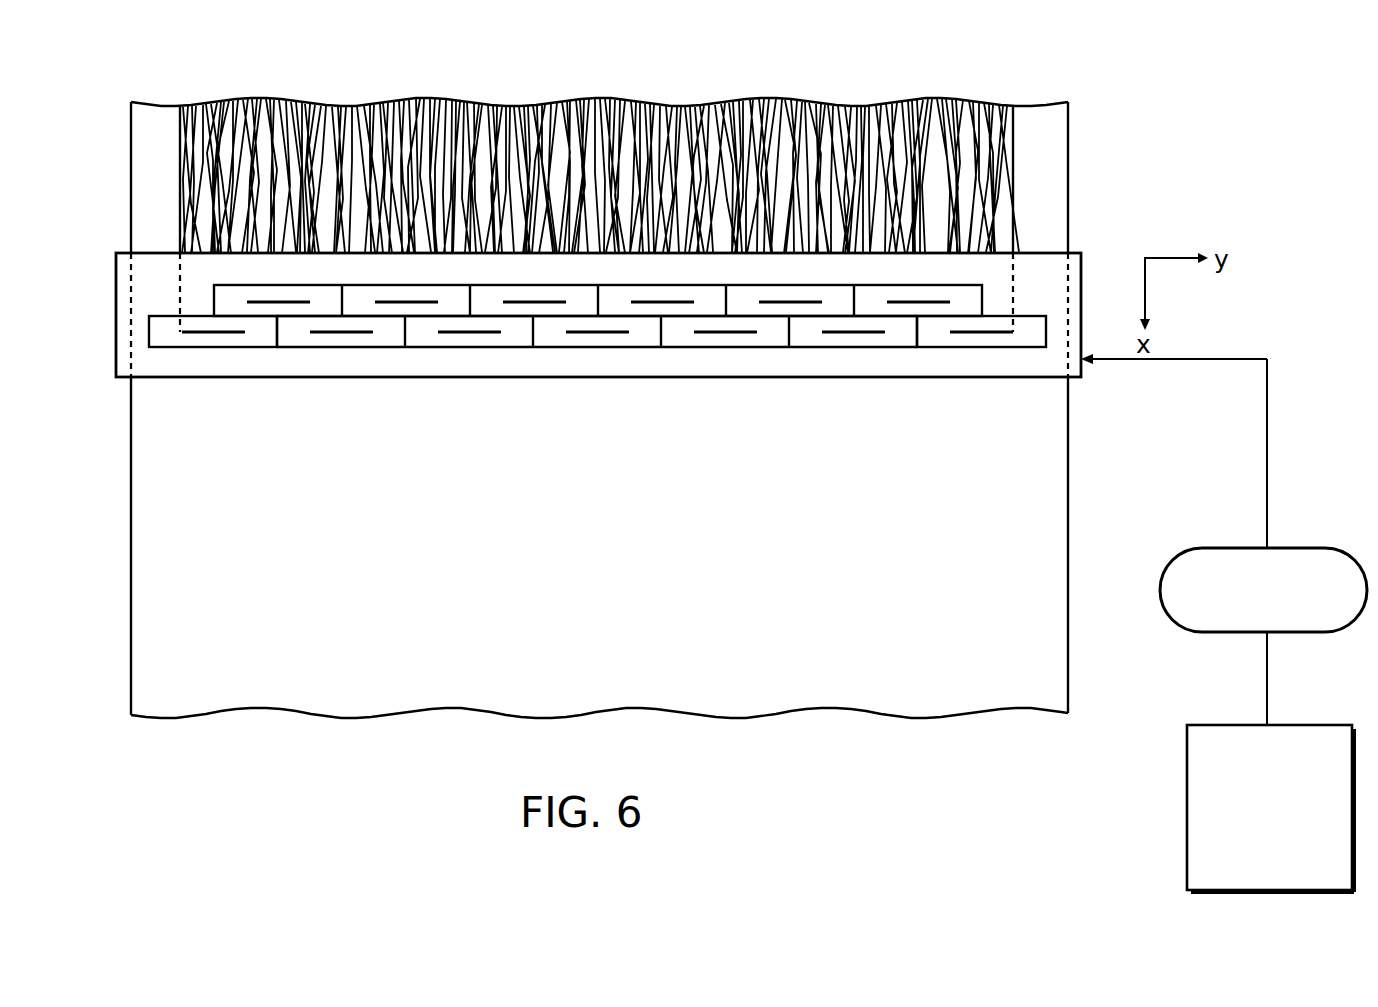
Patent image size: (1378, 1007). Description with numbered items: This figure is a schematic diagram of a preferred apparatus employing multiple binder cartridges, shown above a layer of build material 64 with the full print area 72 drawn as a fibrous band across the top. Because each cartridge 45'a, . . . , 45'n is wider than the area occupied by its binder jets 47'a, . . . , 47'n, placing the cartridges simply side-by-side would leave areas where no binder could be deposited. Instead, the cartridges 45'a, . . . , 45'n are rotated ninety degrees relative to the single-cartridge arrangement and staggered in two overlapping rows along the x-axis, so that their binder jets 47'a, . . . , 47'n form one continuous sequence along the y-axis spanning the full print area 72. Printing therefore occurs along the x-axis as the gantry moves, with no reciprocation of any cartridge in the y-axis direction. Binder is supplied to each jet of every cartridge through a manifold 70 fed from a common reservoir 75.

The full print area 72 is at (860, 72).
The layer of build material 64 is at (733, 590).
The binder cartridge 45'a is at (210, 369).
The binder jets 47'a is at (219, 377).
The binder cartridge 45'n is at (981, 370).
The binder jets 47'n is at (989, 375).
The manifold 70 is at (1263, 590).
The common reservoir 75 is at (1270, 808).